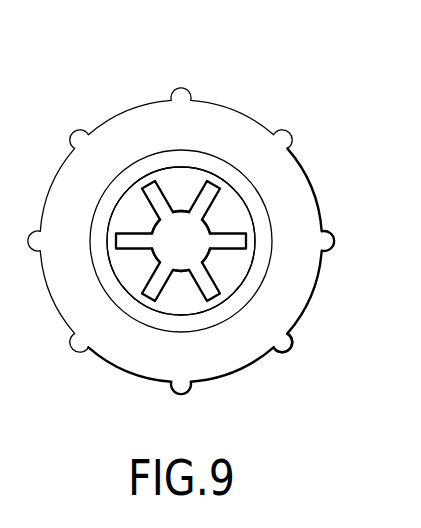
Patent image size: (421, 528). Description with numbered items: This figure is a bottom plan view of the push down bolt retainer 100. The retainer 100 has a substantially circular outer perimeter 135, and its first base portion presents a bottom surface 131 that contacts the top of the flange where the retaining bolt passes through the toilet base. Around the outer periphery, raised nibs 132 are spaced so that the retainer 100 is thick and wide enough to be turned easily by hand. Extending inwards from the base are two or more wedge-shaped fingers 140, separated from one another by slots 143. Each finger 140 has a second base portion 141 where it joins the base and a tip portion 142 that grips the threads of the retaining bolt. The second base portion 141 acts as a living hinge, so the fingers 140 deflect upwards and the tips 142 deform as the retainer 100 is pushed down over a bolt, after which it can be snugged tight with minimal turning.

The retainer 100 is at (253, 55).
The bottom surface 131 is at (297, 195).
The raised nibs 132 is at (290, 352).
The outer perimeter 135 is at (232, 116).
The fingers 140 is at (227, 263).
The second base portion 141 is at (180, 300).
The tip portion 142 is at (178, 211).
The slots 143 is at (152, 192).